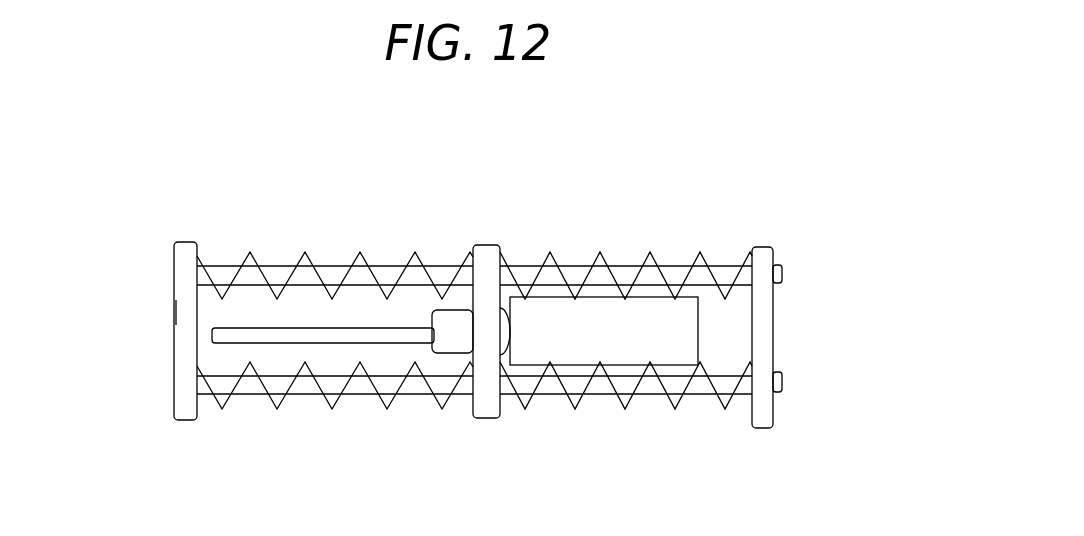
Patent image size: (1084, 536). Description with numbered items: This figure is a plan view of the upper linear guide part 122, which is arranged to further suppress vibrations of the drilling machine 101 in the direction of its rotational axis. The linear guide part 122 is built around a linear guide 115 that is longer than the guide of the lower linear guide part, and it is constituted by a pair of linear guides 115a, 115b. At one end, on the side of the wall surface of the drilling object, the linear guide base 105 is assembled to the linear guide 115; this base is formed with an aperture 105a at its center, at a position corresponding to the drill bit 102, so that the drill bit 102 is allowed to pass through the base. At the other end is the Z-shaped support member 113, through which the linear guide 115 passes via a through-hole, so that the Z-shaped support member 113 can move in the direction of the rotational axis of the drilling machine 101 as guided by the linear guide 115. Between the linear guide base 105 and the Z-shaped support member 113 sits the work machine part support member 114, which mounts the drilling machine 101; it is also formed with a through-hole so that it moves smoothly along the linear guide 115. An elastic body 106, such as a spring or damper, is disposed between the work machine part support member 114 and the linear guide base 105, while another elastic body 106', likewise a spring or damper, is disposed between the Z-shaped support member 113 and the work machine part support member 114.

The linear guide part 122 is at (691, 140).
The linear guide base 105 is at (187, 242).
The aperture 105a is at (190, 312).
The drill bit 102 is at (200, 344).
The elastic body 106 is at (474, 317).
The elastic body 106' is at (626, 225).
The work machine part support member 114 is at (487, 245).
The drilling machine 101 is at (700, 328).
The Z-shaped support member 113 is at (762, 247).
The linear guide 115 is at (851, 324).
The linear guide 115a is at (782, 380).
The linear guide 115b is at (782, 270).